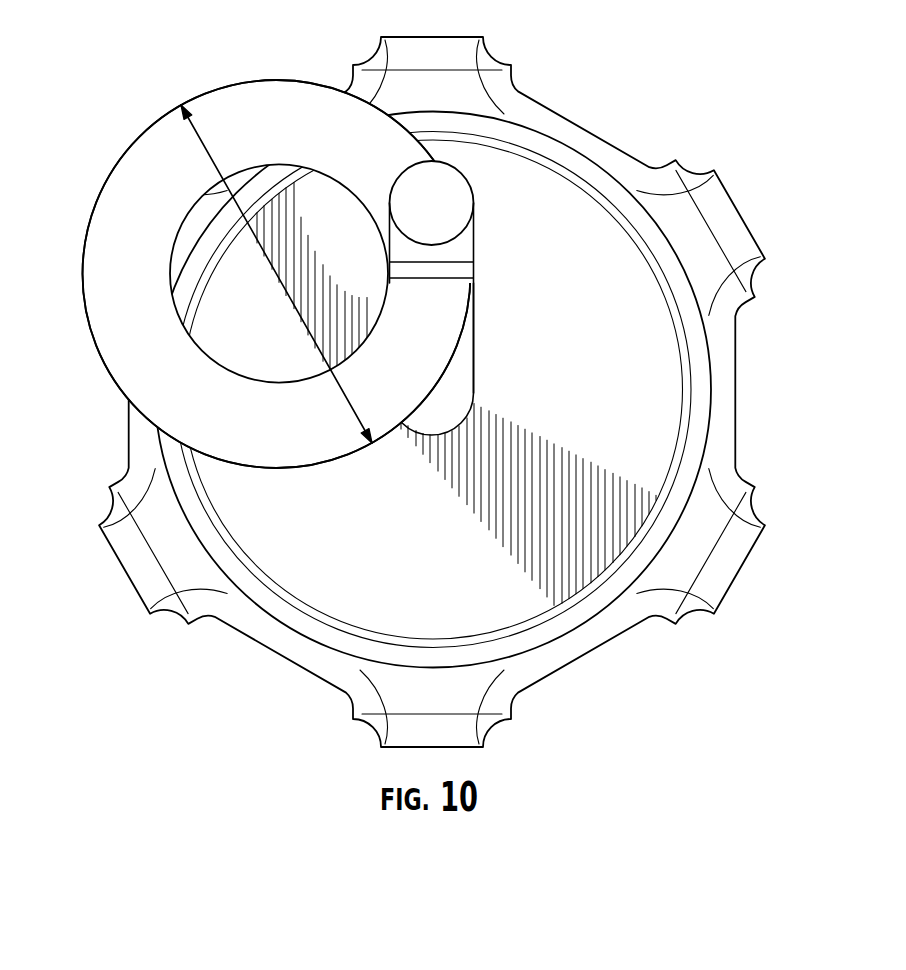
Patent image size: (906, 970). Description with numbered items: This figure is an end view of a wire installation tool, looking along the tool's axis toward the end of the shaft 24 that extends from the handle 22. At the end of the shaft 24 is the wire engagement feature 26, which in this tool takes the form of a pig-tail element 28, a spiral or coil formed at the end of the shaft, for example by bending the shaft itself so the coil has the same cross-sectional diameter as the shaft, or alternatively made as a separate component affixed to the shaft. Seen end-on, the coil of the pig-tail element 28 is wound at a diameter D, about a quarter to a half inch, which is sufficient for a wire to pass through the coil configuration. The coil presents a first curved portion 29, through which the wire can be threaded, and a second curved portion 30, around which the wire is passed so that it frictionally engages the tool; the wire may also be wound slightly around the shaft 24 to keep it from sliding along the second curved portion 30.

The handle 22 is at (723, 354).
The shaft 24 is at (472, 418).
The wire engagement feature 26 is at (82, 259).
The pig-tail element 28 is at (432, 359).
The first curved portion 29 is at (246, 440).
The second curved portion 30 is at (277, 80).
The diameter D is at (193, 133).